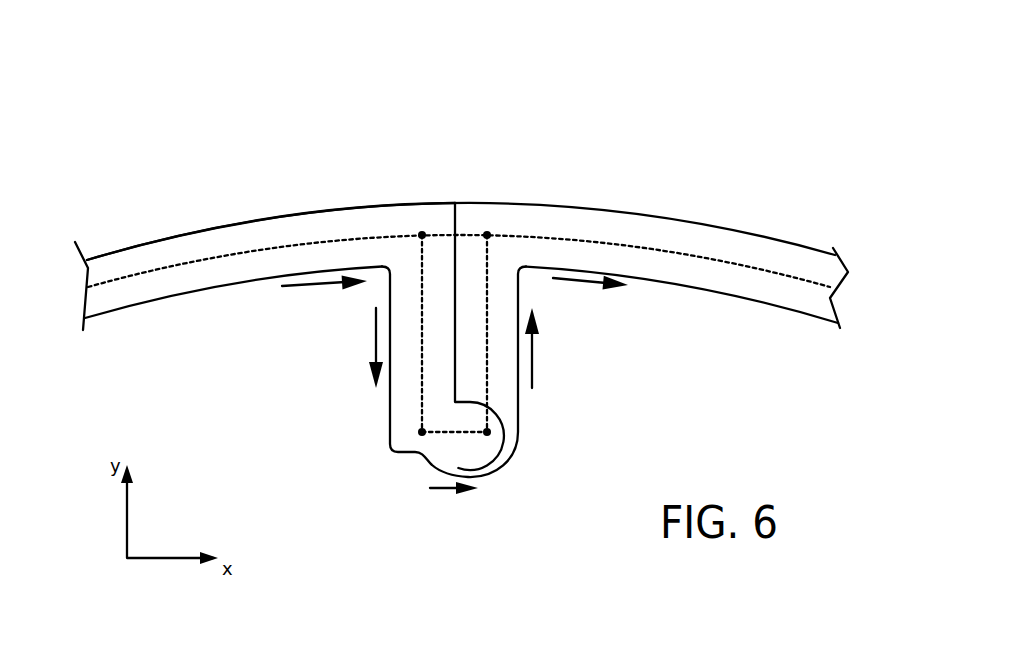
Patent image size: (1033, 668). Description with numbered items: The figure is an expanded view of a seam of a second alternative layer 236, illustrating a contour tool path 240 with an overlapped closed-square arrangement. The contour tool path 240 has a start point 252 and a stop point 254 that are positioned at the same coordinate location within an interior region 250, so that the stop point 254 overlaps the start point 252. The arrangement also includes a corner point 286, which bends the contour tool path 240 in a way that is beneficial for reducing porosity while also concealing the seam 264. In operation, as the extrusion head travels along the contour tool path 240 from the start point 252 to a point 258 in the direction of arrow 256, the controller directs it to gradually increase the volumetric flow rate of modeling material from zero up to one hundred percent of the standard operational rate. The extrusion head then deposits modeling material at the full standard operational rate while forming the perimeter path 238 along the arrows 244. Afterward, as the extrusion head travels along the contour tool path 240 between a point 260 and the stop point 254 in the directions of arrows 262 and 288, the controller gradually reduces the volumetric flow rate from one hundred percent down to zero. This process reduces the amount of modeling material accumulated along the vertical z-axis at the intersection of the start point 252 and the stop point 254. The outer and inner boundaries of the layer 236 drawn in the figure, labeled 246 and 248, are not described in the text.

The layer 236 is at (690, 72).
The perimeter path 238 is at (619, 192).
The contour tool path 240 is at (158, 267).
The arrows 244 is at (320, 284).
The outer surface 246 is at (737, 231).
The inner surface 248 is at (777, 308).
The interior region 250 is at (352, 551).
The start point 252 is at (487, 432).
The stop point 254 is at (500, 434).
The arrow 256 is at (534, 357).
The point 258 is at (487, 232).
The point 260 is at (422, 232).
The arrow 262 is at (373, 326).
The seam 264 is at (452, 183).
The corner point 286 is at (422, 432).
The arrow 288 is at (440, 488).